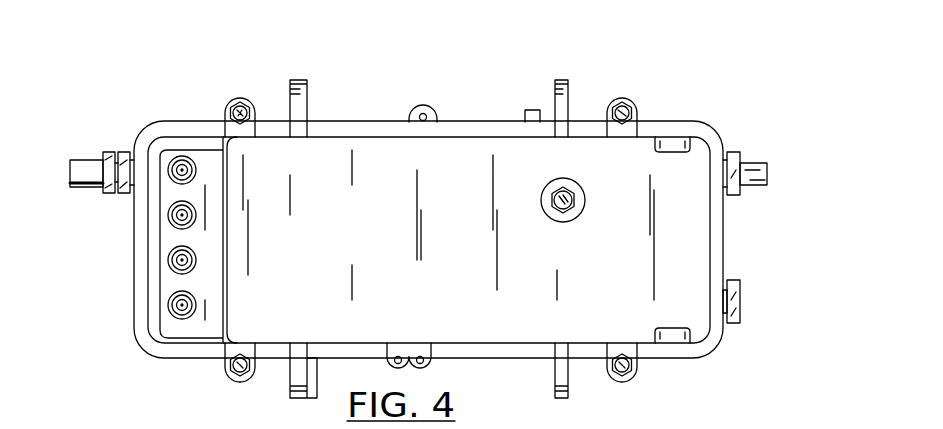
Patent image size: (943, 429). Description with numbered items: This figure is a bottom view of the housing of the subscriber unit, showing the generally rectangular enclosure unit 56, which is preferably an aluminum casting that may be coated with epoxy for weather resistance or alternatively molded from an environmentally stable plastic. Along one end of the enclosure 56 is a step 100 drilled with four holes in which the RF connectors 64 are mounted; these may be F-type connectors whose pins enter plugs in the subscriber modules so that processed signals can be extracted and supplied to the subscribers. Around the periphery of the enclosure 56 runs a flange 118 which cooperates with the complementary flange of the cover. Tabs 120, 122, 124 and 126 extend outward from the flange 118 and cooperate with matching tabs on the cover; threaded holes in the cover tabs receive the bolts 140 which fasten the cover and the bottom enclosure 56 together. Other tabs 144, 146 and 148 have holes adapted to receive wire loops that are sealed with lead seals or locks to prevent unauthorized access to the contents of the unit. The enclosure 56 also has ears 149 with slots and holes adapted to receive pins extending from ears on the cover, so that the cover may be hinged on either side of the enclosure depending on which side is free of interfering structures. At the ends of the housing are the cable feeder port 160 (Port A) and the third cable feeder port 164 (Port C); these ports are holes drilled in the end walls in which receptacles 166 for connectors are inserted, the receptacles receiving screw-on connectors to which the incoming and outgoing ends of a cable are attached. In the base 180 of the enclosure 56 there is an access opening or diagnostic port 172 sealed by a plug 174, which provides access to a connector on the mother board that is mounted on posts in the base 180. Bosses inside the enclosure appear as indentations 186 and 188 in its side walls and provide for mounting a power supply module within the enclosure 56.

The enclosure unit 56 is at (328, 140).
The RF connectors 64 is at (184, 185).
The step 100 is at (175, 148).
The flange 118 is at (134, 300).
The tab 120 is at (228, 102).
The tab 122 is at (633, 107).
The tab 124 is at (226, 373).
The tab 126 is at (633, 373).
The bolts 140 is at (237, 99).
The tab 144 is at (398, 355).
The tab 146 is at (413, 355).
The tab 148 is at (426, 104).
The ears 149 is at (300, 80).
The cable feeder port 160 is at (102, 166).
The cable feeder port 164 is at (741, 301).
The receptacles 166 is at (758, 163).
The diagnostic port 172 is at (562, 222).
The plug 174 is at (568, 207).
The base 180 is at (356, 229).
The indentation 186 is at (690, 364).
The indentation 188 is at (670, 142).